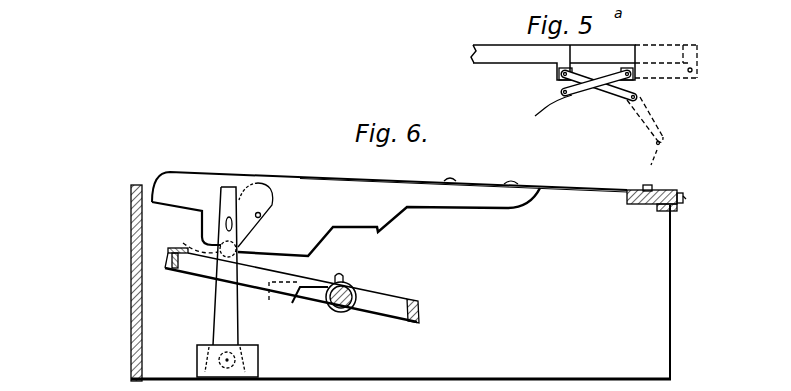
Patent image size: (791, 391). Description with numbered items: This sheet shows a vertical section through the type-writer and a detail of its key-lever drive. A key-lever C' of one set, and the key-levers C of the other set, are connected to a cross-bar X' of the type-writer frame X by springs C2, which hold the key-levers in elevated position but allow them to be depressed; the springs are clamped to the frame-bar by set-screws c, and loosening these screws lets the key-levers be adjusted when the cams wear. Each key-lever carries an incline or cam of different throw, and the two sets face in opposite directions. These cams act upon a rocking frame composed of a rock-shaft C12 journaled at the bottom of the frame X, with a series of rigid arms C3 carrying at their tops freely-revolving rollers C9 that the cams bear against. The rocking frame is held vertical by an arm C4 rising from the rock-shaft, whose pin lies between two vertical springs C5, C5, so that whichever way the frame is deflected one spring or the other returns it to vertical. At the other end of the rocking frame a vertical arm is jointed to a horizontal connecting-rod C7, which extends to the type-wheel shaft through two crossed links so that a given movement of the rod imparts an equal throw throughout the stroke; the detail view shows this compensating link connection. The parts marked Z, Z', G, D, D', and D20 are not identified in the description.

In FIG. 5A, the connecting-rod C7 is at (584, 62).
In FIG. 5A, the toggle link Z is at (585, 91).
In FIG. 5A, the toggle link Z' is at (614, 116).
In FIG. 6, the frame X is at (401, 283).
In FIG. 6, the cross-bar X' is at (691, 194).
In FIG. 6, the key-levers C' is at (427, 214).
In FIG. 6, the springs C2 is at (488, 190).
In FIG. 6, the set-screws c is at (647, 185).
In FIG. 6, the key-levers C is at (225, 279).
In FIG. 6, the rigid arms C3 is at (255, 215).
In FIG. 6, the arm C4 is at (221, 233).
In FIG. 6, the vertical springs C5 is at (244, 314).
In FIG. 6, the rollers C9 is at (191, 239).
In FIG. 6, the rock-shaft C12 is at (235, 360).
In FIG. 6, the guide G is at (166, 257).
In FIG. 6, the presser bar D is at (291, 293).
In FIG. 6, the presser bar collar D' is at (352, 292).
In FIG. 6, the presser bar end D20 is at (420, 312).